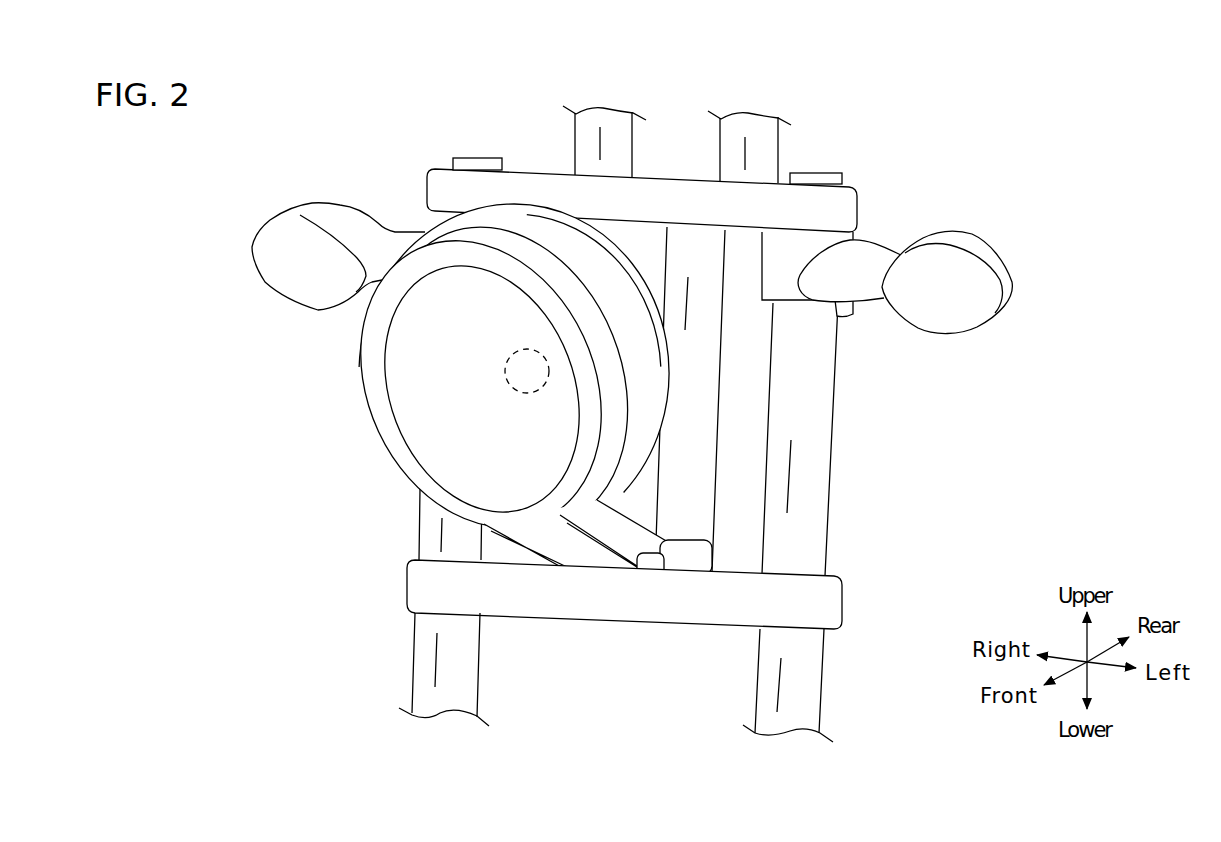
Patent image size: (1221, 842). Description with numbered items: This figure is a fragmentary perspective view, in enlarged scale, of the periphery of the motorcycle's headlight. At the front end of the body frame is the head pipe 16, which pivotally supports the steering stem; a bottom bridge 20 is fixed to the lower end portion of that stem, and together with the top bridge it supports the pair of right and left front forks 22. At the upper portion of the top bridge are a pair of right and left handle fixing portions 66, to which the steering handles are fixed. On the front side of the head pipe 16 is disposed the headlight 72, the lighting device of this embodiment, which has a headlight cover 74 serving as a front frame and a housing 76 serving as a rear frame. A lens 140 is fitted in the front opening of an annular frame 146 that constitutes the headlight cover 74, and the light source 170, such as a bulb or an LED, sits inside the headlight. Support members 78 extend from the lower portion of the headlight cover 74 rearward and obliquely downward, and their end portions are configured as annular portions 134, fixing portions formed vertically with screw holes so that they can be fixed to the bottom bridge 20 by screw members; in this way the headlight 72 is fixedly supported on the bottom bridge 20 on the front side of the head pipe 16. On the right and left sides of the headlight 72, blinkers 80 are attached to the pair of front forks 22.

The head pipe 16 is at (705, 338).
The bottom bridge 20 is at (828, 606).
The front forks 22 is at (460, 672).
The handle fixing portions 66 is at (730, 156).
The headlight 72 is at (471, 348).
The headlight cover 74 is at (487, 237).
The annular frame 146 is at (636, 173).
The housing 76 is at (536, 224).
The support members 78 is at (605, 593).
The blinkers 80 is at (315, 203).
The annular portions 134 is at (687, 562).
The lens 140 is at (432, 432).
The light source 170 is at (520, 372).